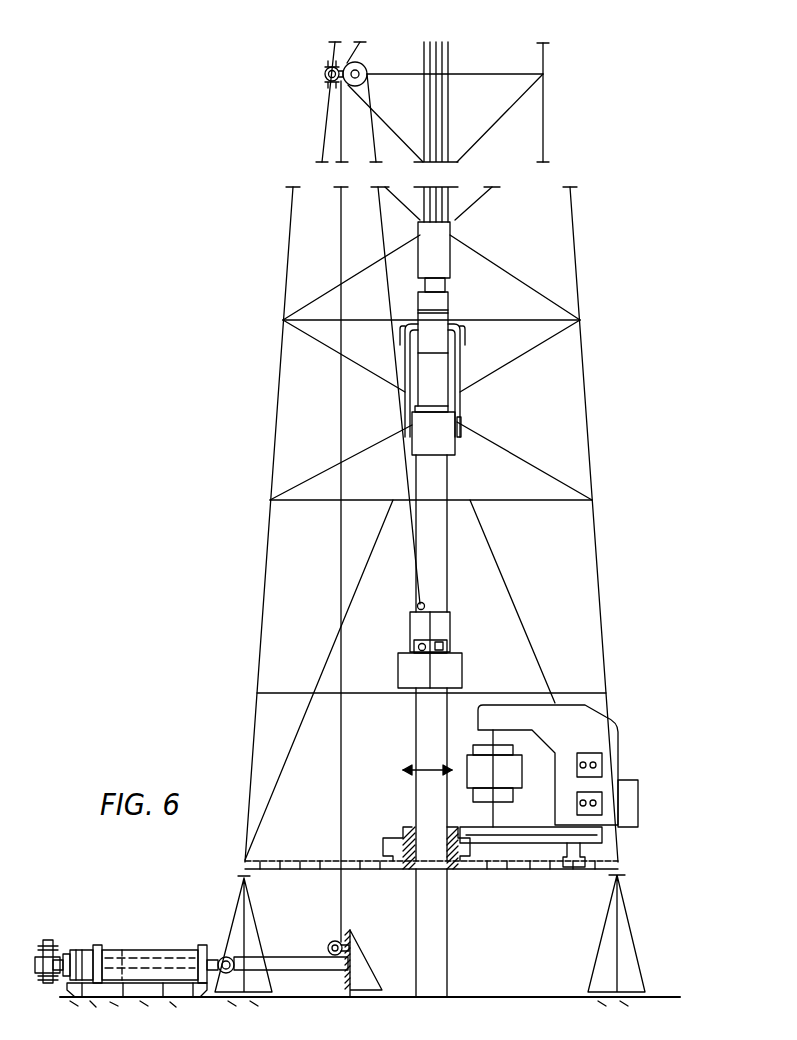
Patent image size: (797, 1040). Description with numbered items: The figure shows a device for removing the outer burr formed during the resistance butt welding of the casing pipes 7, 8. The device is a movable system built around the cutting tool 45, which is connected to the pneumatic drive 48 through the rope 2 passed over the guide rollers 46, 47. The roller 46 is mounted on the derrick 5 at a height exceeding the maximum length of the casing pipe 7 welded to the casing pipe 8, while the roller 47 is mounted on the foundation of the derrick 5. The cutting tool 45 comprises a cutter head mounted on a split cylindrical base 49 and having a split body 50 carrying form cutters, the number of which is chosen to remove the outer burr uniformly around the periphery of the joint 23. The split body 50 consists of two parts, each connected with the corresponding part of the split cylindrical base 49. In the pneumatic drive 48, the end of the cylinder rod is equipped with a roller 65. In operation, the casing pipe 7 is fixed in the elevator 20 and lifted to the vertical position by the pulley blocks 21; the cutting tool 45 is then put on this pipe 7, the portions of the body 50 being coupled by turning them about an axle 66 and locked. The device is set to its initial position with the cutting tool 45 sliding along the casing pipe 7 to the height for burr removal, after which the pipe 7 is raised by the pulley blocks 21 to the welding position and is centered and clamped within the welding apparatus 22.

The rope 2 is at (340, 407).
The derrick 5 is at (272, 455).
The casing pipe 7 is at (440, 487).
The casing pipe 8 is at (433, 912).
The elevator 20 is at (443, 427).
The pulley blocks 21 is at (466, 258).
The welding apparatus 22 is at (585, 728).
The joint 23 is at (426, 770).
The cutting tool 45 is at (459, 381).
The guide roller 46 is at (367, 67).
The guide roller 47 is at (337, 942).
The pneumatic drive 48 is at (120, 950).
The split cylindrical base 49 is at (413, 622).
The split body 50 is at (411, 667).
The roller 65 is at (231, 952).
The axle 66 is at (432, 646).